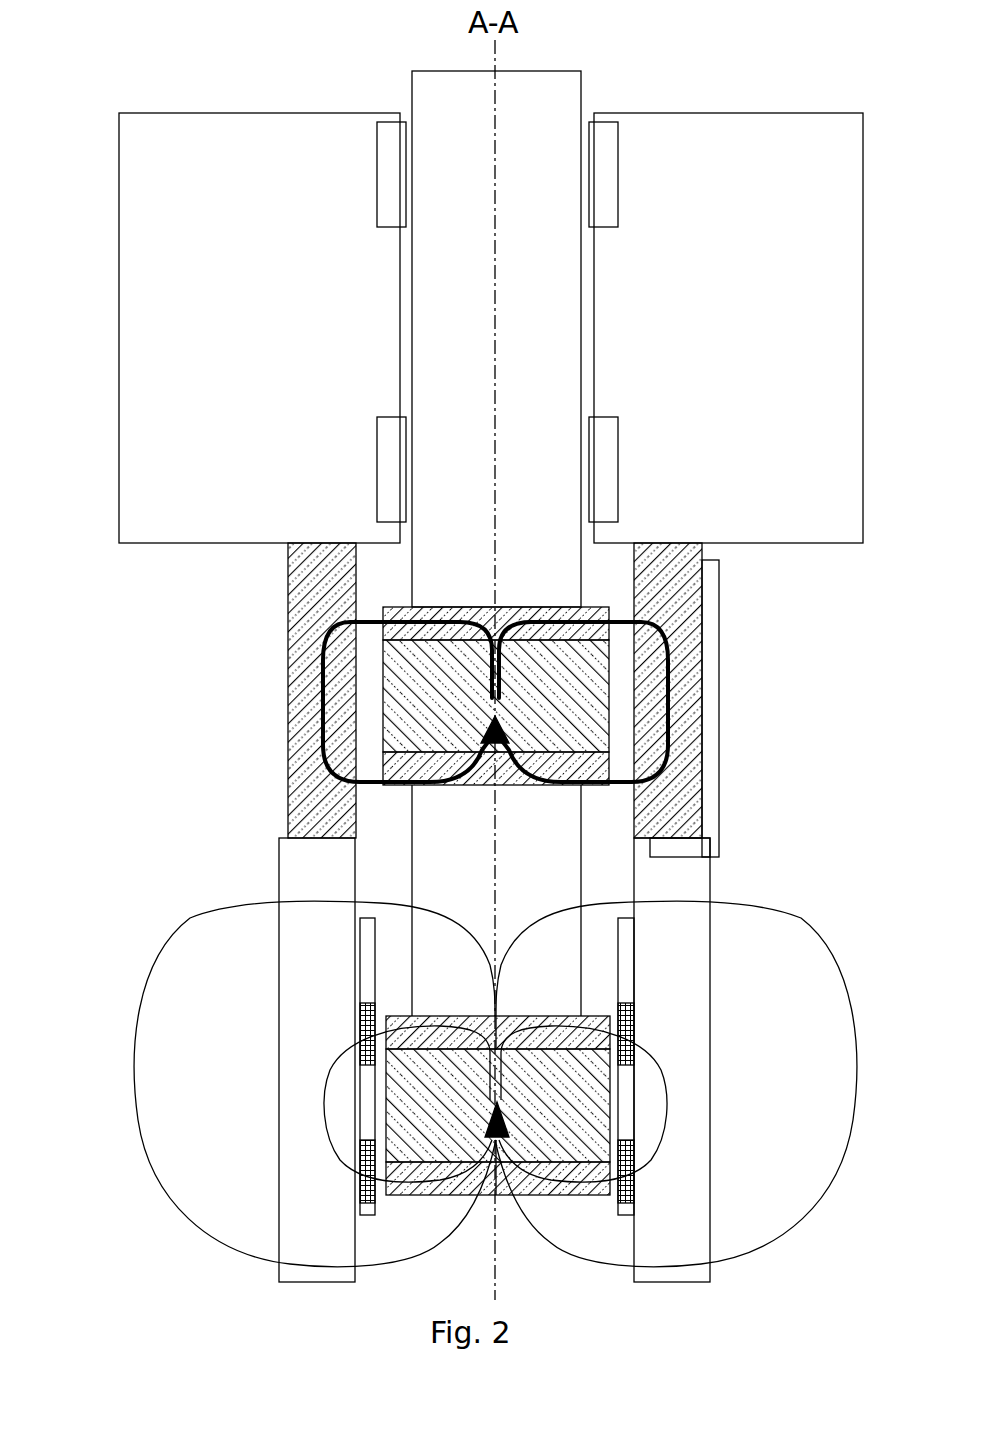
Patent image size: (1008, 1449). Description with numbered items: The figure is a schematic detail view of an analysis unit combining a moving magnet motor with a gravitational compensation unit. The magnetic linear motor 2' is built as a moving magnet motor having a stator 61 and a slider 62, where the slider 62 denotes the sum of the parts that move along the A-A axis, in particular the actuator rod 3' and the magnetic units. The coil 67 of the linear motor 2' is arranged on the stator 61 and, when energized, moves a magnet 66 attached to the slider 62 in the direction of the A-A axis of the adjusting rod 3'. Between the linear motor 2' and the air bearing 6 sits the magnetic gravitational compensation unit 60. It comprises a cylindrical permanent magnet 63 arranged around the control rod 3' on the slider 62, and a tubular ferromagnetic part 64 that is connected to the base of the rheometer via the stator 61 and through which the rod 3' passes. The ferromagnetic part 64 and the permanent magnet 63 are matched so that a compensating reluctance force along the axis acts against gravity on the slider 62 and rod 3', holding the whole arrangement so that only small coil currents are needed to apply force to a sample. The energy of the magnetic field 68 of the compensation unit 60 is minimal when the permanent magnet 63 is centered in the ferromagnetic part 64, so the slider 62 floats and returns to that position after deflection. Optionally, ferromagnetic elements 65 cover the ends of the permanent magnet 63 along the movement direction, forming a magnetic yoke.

The actuator rod 3' is at (372, 508).
The air bearing 6 is at (722, 105).
The magnetic field 68 is at (530, 617).
The ferromagnetic elements 65 is at (513, 615).
The magnetic gravitational compensation unit 60 is at (720, 675).
The tubular ferromagnetic part 64 is at (303, 705).
The permanent magnet 63 is at (560, 713).
The magnetic linear motor 2' is at (457, 1029).
The stator 61 is at (320, 1163).
The slider 62 is at (500, 1207).
The coil 67 is at (357, 1207).
The magnet 66 is at (623, 1170).